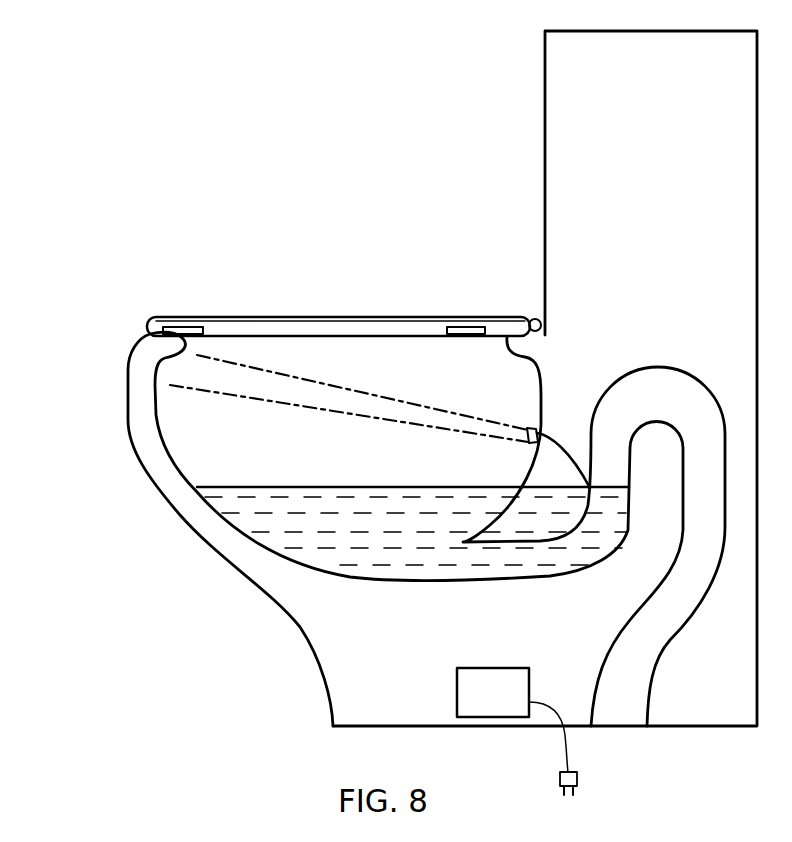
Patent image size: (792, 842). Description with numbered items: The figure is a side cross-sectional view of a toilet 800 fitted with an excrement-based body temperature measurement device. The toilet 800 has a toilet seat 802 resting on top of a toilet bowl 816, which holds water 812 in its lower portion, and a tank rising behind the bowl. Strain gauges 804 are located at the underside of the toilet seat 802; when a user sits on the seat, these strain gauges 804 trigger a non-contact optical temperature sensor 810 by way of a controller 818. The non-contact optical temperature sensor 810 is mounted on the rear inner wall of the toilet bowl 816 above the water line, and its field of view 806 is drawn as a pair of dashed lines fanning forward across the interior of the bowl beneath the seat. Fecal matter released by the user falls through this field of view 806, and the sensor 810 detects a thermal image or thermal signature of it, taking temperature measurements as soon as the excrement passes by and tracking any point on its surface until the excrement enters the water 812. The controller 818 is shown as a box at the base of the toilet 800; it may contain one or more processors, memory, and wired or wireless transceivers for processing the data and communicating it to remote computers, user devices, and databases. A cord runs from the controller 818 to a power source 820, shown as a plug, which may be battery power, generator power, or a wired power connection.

The toilet 800 is at (675, 149).
The toilet seat 802 is at (329, 317).
The strain gauges 804 is at (186, 327).
The field of view 806 is at (239, 389).
The non-contact optical temperature sensor 810 is at (537, 437).
The water 812 is at (392, 552).
The toilet bowl 816 is at (158, 412).
The controller 818 is at (470, 697).
The power source 820 is at (577, 781).